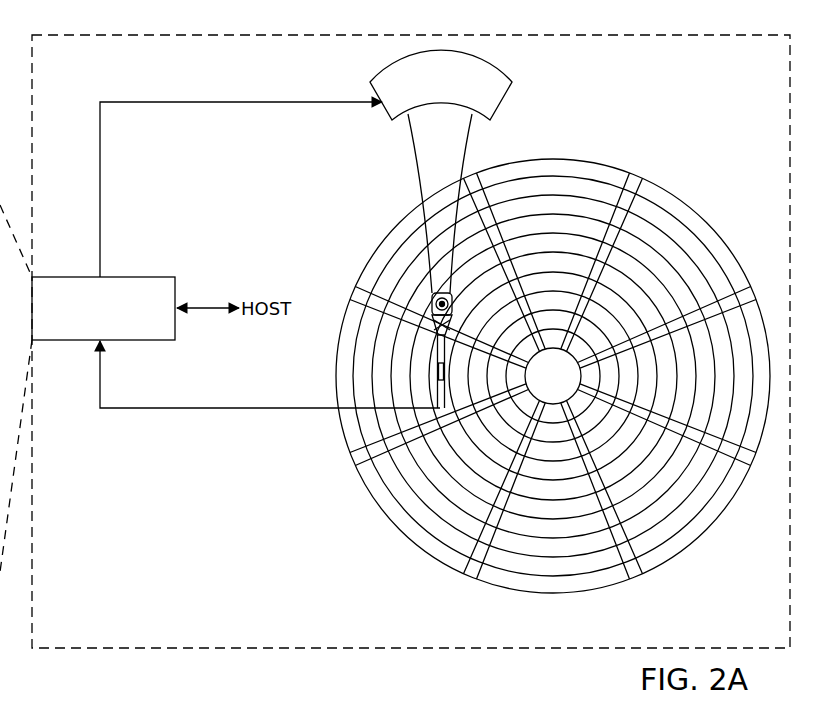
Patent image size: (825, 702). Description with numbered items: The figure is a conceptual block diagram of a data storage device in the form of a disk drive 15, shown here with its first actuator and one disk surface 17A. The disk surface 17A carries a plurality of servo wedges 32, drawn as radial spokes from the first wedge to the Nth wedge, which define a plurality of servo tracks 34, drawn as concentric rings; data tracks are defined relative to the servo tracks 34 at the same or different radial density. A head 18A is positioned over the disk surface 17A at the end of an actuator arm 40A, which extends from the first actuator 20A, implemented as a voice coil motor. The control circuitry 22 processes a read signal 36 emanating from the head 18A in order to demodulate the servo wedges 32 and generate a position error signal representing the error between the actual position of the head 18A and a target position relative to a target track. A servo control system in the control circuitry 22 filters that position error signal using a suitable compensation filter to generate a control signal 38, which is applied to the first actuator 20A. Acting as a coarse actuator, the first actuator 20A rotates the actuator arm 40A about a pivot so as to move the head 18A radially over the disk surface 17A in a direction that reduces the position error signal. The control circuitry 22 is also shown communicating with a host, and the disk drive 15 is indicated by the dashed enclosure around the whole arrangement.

The disk drive 15 is at (104, 651).
The disk surface 17A is at (702, 210).
The head 18A is at (433, 382).
The first actuator 20A is at (390, 118).
The control circuitry 22 is at (138, 277).
The servo wedges 32 is at (551, 386).
The servo tracks 34 is at (545, 186).
The read signal 36 is at (226, 408).
The control signal 38 is at (100, 181).
The actuator arm 40A is at (423, 183).